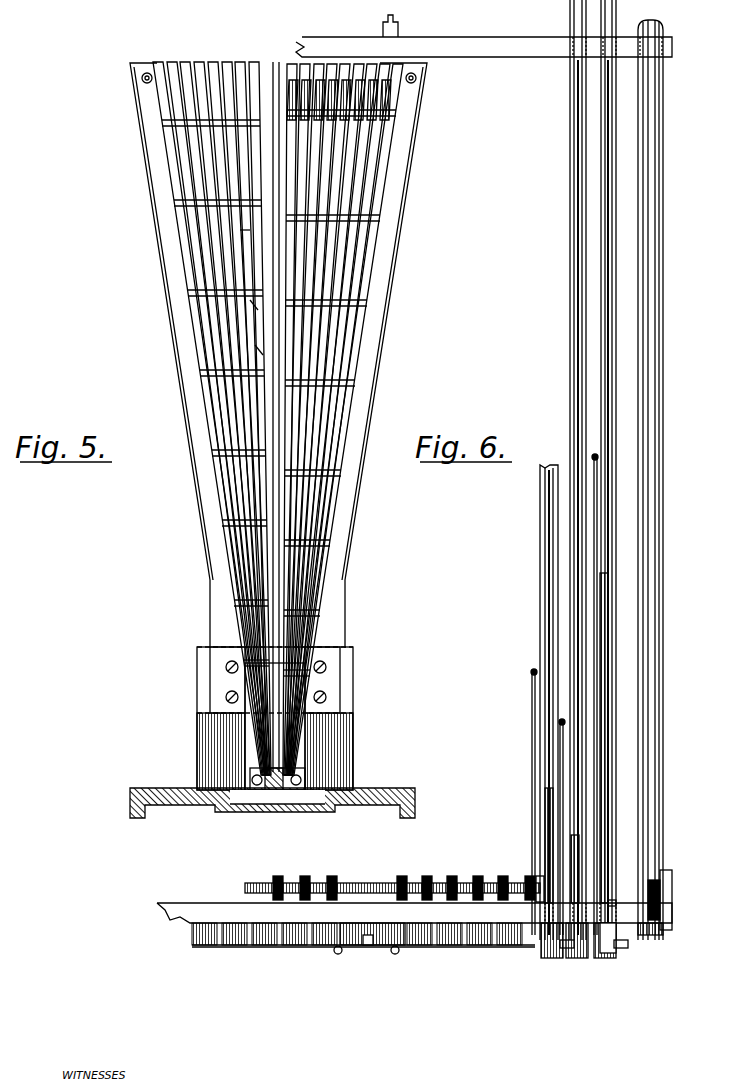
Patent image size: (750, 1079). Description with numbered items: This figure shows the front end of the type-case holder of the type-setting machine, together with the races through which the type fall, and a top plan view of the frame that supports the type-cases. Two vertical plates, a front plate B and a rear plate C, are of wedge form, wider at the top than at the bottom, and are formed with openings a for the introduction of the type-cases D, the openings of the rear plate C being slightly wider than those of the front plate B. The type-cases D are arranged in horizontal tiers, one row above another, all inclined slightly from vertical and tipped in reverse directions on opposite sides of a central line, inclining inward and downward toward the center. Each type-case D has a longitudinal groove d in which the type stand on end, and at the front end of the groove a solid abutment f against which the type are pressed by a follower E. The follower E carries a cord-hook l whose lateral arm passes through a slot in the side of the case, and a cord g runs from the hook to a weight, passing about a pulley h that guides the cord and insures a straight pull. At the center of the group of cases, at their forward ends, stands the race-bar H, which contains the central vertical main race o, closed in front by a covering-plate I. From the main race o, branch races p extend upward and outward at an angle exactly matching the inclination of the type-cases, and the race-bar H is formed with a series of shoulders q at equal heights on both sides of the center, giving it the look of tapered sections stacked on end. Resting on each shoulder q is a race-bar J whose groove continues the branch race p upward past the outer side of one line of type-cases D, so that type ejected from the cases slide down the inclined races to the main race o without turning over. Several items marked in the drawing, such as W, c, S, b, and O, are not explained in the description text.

In FIG. 5, the opening a is at (375, 190).
In FIG. 5, the race-bar J is at (190, 184).
In FIG. 6, the race-bar J is at (315, 930).
In FIG. 5, the branch race p is at (250, 230).
In FIG. 6, the branch race p is at (405, 940).
In FIG. 5, the main race o is at (256, 305).
In FIG. 5, the shoulder q is at (262, 350).
In FIG. 5, the front plate B is at (360, 245).
In FIG. 6, the front plate B is at (414, 902).
In FIG. 5, the race-bar H is at (268, 396).
In FIG. 6, the race-bar H is at (384, 938).
In FIG. 5, the pivot pin W is at (270, 796).
In FIG. 6, the rear plate C is at (484, 35).
In FIG. 6, the post c is at (661, 480).
In FIG. 6, the type-case D is at (563, 470).
In FIG. 6, the groove d is at (578, 240).
In FIG. 6, the follower E is at (604, 517).
In FIG. 6, the cord-hook l is at (533, 670).
In FIG. 6, the cord g is at (600, 556).
In FIG. 6, the shaft S is at (392, 883).
In FIG. 6, the pulley h is at (522, 876).
In FIG. 6, the lug b is at (612, 905).
In FIG. 6, the opening O is at (365, 940).
In FIG. 6, the covering-plate I is at (352, 947).
In FIG. 6, the abutment f is at (545, 958).